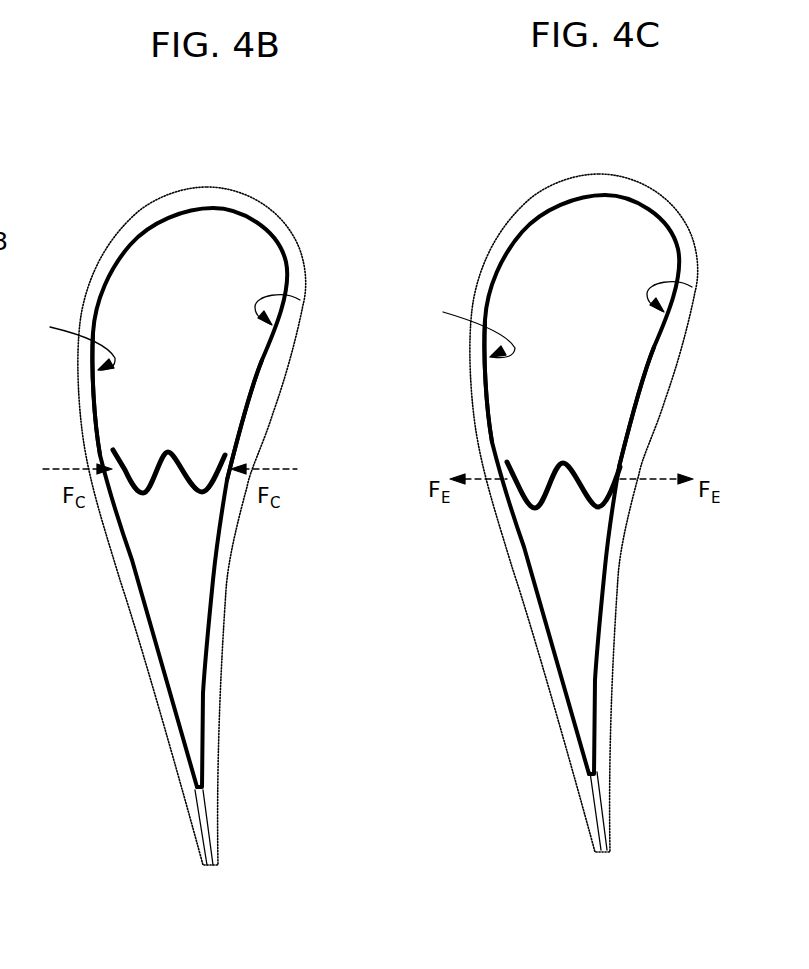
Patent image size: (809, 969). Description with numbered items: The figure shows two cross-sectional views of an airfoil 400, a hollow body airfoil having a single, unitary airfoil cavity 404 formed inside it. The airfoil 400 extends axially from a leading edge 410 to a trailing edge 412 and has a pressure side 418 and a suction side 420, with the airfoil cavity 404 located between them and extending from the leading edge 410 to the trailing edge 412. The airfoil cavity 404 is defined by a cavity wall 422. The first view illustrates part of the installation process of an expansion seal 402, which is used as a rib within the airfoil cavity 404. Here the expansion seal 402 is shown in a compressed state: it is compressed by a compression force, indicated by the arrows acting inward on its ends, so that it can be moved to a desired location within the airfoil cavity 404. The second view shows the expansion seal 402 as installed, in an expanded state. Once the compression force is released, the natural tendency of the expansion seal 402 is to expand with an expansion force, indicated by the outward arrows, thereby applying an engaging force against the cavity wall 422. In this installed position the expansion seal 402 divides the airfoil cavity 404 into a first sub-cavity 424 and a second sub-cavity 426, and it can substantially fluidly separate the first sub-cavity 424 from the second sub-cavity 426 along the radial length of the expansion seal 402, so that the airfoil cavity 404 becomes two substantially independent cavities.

In FIG. 4B, the airfoil 400 is at (332, 240).
In FIG. 4C, the airfoil 400 is at (724, 227).
In FIG. 4B, the expansion seal 402 is at (202, 494).
In FIG. 4C, the expansion seal 402 is at (603, 505).
In FIG. 4B, the airfoil cavity 404 is at (168, 260).
In FIG. 4C, the airfoil cavity 404 is at (560, 247).
In FIG. 4B, the leading edge 410 is at (220, 188).
In FIG. 4C, the leading edge 410 is at (612, 175).
In FIG. 4B, the trailing edge 412 is at (220, 860).
In FIG. 4C, the trailing edge 412 is at (612, 847).
In FIG. 4B, the pressure side 418 is at (252, 417).
In FIG. 4C, the pressure side 418 is at (635, 442).
In FIG. 4B, the suction side 420 is at (100, 445).
In FIG. 4C, the suction side 420 is at (492, 432).
In FIG. 4B, the cavity wall 422 is at (343, 320).
In FIG. 4C, the cavity wall 422 is at (735, 307).
In FIG. 4C, the first sub-cavity 424 is at (595, 392).
In FIG. 4C, the second sub-cavity 426 is at (588, 552).